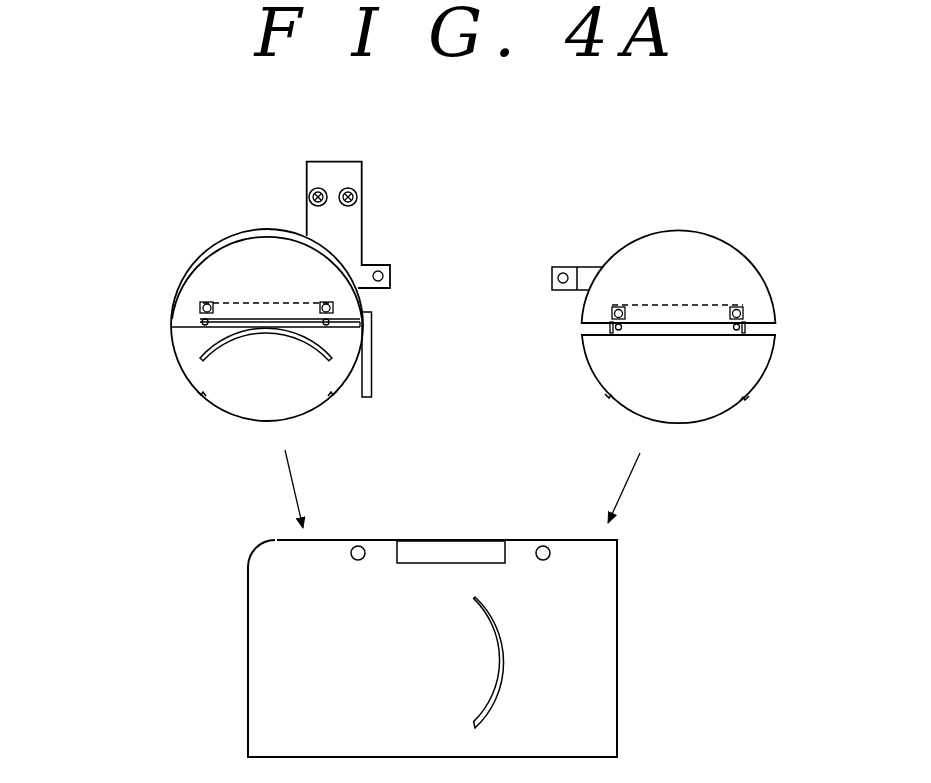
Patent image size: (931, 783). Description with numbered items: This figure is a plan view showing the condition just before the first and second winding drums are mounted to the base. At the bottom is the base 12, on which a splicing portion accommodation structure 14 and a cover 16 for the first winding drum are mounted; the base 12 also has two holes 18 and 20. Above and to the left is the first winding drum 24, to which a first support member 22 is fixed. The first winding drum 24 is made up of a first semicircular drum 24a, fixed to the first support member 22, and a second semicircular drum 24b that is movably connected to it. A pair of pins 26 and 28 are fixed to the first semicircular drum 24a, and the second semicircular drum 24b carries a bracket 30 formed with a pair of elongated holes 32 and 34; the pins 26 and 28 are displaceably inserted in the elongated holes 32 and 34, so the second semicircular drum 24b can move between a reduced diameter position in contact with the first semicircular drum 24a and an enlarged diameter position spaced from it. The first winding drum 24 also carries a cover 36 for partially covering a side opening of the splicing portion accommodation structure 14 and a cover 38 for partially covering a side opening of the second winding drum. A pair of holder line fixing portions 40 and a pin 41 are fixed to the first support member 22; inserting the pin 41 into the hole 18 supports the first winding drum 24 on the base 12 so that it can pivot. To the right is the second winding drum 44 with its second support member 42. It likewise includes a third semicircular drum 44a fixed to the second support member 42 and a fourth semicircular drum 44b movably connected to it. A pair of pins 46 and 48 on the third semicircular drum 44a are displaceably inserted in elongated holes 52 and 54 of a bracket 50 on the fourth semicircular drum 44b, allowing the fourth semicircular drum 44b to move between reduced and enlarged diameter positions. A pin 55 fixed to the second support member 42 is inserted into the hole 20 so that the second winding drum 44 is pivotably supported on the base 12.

The base 12 is at (607, 675).
The splicing portion accommodation structure 14 is at (452, 547).
The cover 16 is at (503, 657).
The hole 18 is at (358, 546).
The hole 20 is at (543, 546).
The first support member 22 is at (350, 221).
The first winding drum 24 is at (190, 265).
The first semicircular drum 24a is at (266, 228).
The second semicircular drum 24b is at (190, 386).
The pin 26 is at (212, 302).
The pin 28 is at (325, 302).
The bracket 30 is at (282, 326).
The elongated hole 32 is at (200, 320).
The elongated hole 34 is at (329, 331).
The cover 36 is at (373, 384).
The cover 38 is at (238, 343).
The holder line fixing portions 40 is at (348, 187).
The pin 41 is at (388, 266).
The second support member 42 is at (583, 265).
The second winding drum 44 is at (757, 267).
The third semicircular drum 44a is at (680, 228).
The fourth semicircular drum 44b is at (705, 410).
The pin 46 is at (625, 307).
The pin 48 is at (733, 307).
The bracket 50 is at (682, 332).
The elongated hole 52 is at (610, 335).
The elongated hole 54 is at (747, 337).
The pin 55 is at (562, 272).